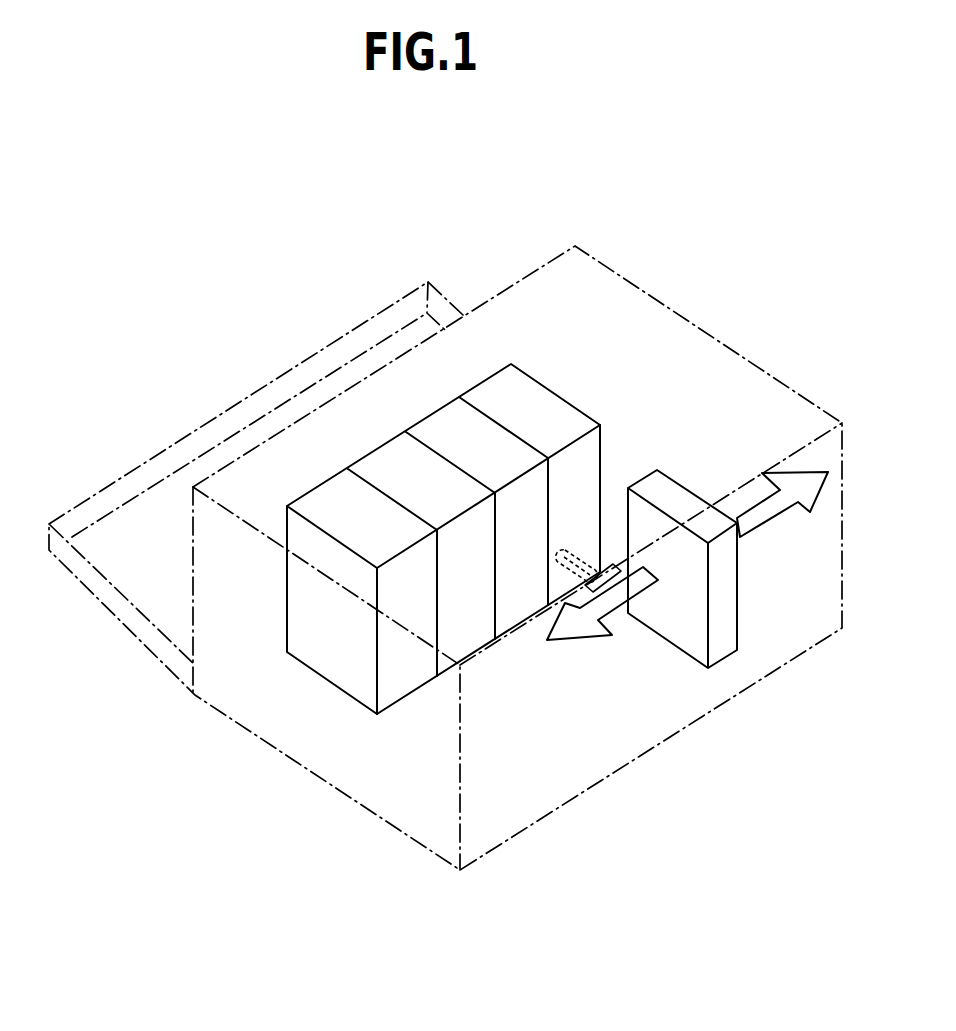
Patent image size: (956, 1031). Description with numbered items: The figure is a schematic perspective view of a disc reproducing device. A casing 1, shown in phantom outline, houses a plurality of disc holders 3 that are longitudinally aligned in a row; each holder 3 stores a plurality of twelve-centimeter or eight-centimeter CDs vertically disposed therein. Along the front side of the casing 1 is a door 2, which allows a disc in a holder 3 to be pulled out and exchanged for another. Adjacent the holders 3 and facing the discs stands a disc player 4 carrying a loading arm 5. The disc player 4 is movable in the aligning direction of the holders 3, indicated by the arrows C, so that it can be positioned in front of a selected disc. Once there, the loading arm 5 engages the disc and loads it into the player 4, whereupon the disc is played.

The casing 1 is at (762, 368).
The door 2 is at (245, 399).
The disc holder 3 is at (363, 459).
The disc player 4 is at (746, 616).
The loading arm 5 is at (610, 575).
The arrows C is at (643, 588).